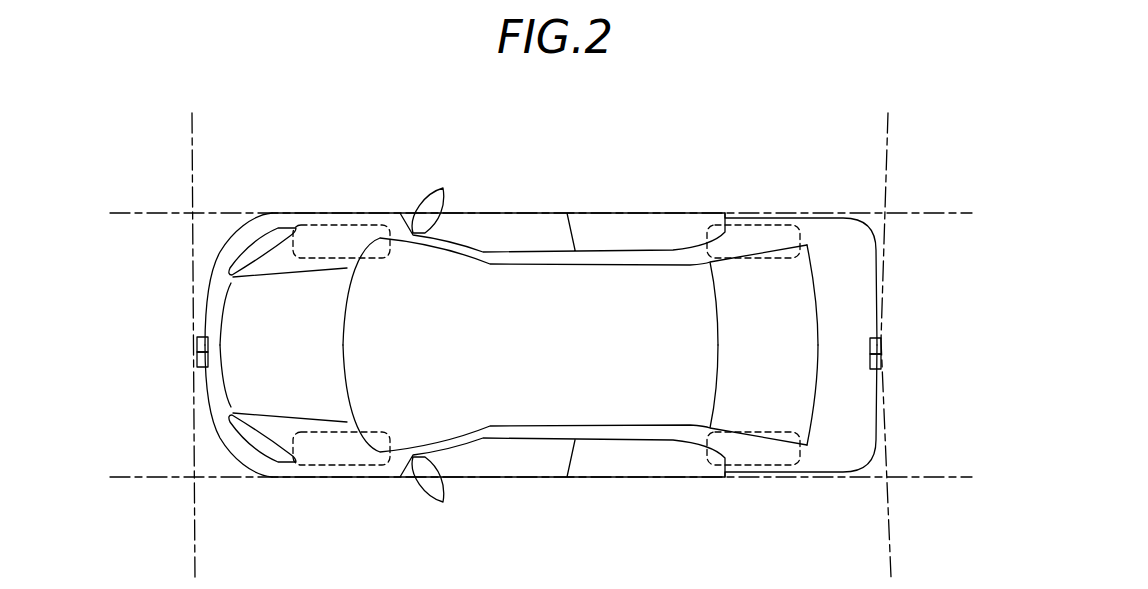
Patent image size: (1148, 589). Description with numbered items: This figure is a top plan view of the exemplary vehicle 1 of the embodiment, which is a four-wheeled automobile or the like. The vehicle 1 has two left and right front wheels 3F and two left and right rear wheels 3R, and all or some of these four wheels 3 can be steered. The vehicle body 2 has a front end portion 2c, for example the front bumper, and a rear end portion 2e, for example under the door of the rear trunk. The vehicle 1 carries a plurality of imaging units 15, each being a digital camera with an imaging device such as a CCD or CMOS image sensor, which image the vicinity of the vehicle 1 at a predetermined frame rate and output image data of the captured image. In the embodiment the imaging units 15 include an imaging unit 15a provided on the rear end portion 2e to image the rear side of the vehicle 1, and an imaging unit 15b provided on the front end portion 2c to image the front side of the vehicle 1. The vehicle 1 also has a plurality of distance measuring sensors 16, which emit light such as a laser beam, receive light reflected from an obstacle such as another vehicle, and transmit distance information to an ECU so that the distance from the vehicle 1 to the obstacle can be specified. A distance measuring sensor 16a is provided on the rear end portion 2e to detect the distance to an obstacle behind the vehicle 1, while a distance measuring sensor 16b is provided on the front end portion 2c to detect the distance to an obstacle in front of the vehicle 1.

The vehicle 1 is at (661, 126).
The vehicle body 2 is at (823, 214).
The front end portion 2c is at (223, 428).
The rear end portion 2e is at (874, 436).
The wheels 3 is at (546, 348).
The front wheels 3F is at (340, 223).
The rear wheels 3R is at (750, 224).
The imaging units 15 is at (549, 335).
The imaging unit 15a is at (882, 345).
The imaging unit 15b is at (197, 344).
The distance measuring sensors 16 is at (549, 369).
The distance measuring sensor 16a is at (878, 370).
The distance measuring sensor 16b is at (198, 365).